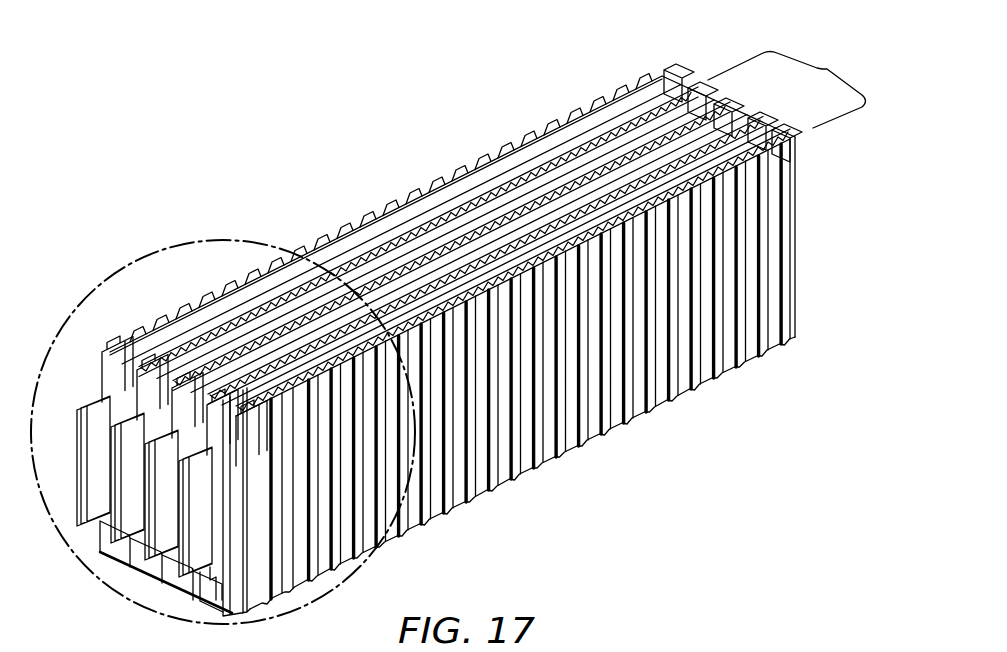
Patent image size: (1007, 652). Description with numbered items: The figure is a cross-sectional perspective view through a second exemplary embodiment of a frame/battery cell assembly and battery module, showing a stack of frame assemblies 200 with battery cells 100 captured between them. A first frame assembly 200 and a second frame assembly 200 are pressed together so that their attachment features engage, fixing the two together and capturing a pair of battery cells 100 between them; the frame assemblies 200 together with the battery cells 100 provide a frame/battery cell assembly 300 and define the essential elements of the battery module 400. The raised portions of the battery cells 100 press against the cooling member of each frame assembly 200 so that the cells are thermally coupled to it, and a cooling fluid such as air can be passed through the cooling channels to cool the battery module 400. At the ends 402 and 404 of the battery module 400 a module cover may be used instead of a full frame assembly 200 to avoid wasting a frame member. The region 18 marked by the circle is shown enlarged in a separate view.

The region 18 is at (155, 243).
The battery cell 100 is at (664, 178).
The frame assembly 200 is at (762, 113).
The frame/battery cell assembly 300 is at (823, 70).
The battery module 400 is at (448, 204).
The end 402 is at (705, 386).
The end 404 is at (495, 148).